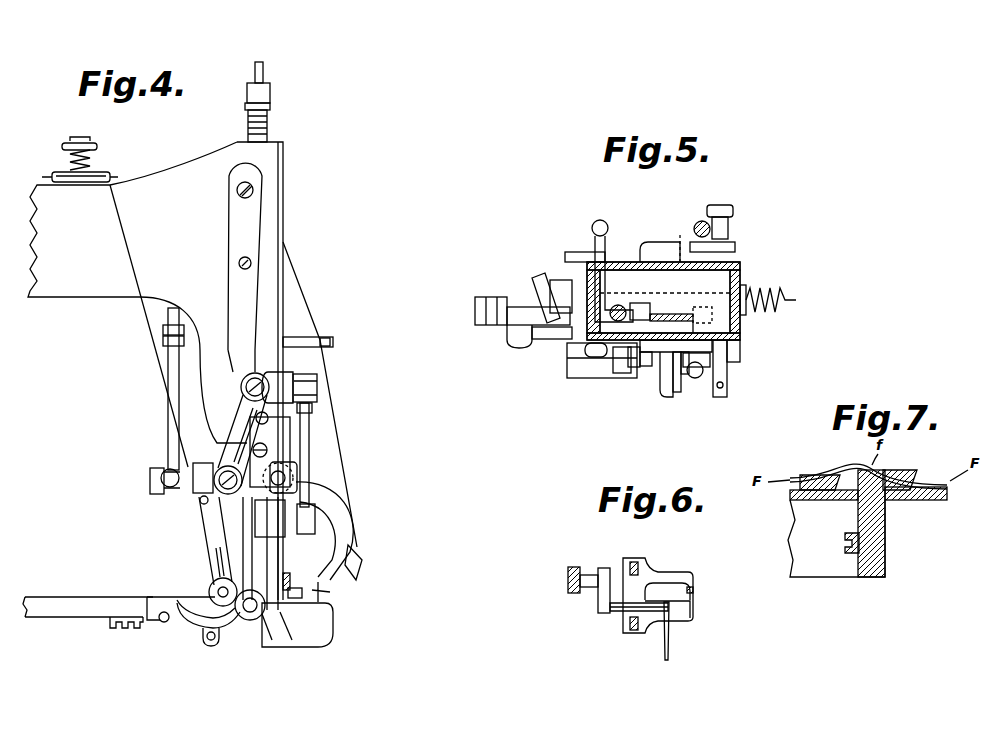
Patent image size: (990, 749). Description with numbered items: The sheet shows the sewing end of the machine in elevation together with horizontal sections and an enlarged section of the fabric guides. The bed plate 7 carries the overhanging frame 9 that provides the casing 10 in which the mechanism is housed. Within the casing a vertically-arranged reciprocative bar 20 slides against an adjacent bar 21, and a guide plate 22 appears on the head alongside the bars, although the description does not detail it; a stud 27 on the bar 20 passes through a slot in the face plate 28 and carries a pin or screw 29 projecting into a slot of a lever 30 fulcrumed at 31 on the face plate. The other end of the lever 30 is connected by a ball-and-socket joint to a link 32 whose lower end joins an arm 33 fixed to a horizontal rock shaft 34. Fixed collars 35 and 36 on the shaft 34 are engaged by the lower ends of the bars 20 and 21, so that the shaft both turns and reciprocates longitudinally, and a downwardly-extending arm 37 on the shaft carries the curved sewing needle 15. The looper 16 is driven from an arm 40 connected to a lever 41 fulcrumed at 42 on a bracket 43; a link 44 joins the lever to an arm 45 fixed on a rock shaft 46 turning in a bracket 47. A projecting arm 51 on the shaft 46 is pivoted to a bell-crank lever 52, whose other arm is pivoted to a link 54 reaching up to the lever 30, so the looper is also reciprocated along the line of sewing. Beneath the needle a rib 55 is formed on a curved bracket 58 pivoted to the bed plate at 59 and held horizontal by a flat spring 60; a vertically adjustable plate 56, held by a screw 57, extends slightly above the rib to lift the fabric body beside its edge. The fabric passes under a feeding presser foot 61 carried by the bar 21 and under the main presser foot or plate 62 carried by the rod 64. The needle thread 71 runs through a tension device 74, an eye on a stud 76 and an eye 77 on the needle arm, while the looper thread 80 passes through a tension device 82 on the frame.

In FIG. 4, the bed plate 7 is at (88, 596).
In FIG. 4, the frame 9 is at (54, 292).
In FIG. 5, the casing 10 is at (745, 270).
In FIG. 4, the sewing needle 15 is at (325, 594).
In FIG. 6, the sewing needle 15 is at (668, 645).
In FIG. 6, the looper 16 is at (615, 612).
In FIG. 4, the reciprocative bar 20 is at (265, 66).
In FIG. 5, the reciprocative bar 20 is at (686, 313).
In FIG. 5, the bar 21 is at (650, 305).
In FIG. 4, the guide plate 22 is at (250, 302).
In FIG. 5, the guide plate 22 is at (633, 303).
In FIG. 5, the stud 27 is at (685, 362).
In FIG. 4, the face plate 28 is at (284, 232).
In FIG. 5, the face plate 28 is at (748, 345).
In FIG. 5, the pin or screw 29 is at (700, 378).
In FIG. 4, the lever 30 is at (318, 376).
In FIG. 5, the lever 30 is at (660, 375).
In FIG. 4, the fulcrum 31 is at (312, 400).
In FIG. 5, the fulcrum 31 is at (590, 352).
In FIG. 4, the arm or link 32 is at (252, 432).
In FIG. 5, the arm or link 32 is at (535, 293).
In FIG. 4, the arm 33 is at (290, 458).
In FIG. 5, the arm 33 is at (558, 280).
In FIG. 4, the horizontal rock shaft 34 is at (285, 490).
In FIG. 5, the horizontal rock shaft 34 is at (630, 362).
In FIG. 5, the collar 35 is at (742, 352).
In FIG. 5, the collar 36 is at (645, 360).
In FIG. 4, the needle arm 37 is at (345, 522).
In FIG. 5, the needle arm 37 is at (675, 392).
In FIG. 4, the arm 40 is at (166, 392).
In FIG. 5, the arm 40 is at (700, 216).
In FIG. 4, the lever 41 is at (180, 492).
In FIG. 5, the lever 41 is at (655, 242).
In FIG. 5, the fulcrum 42 is at (680, 232).
In FIG. 5, the bracket 43 is at (735, 247).
In FIG. 4, the arm or link 44 is at (205, 525).
In FIG. 5, the arm or link 44 is at (570, 255).
In FIG. 4, the arm 45 is at (225, 606).
In FIG. 4, the rock shaft 46 is at (250, 620).
In FIG. 5, the rock shaft 46 is at (485, 297).
In FIG. 6, the rock shaft 46 is at (582, 590).
In FIG. 6, the bracket 47 is at (603, 612).
In FIG. 4, the projecting arm 51 is at (272, 640).
In FIG. 5, the projecting arm 51 is at (495, 325).
In FIG. 4, the bell-crank lever 52 is at (292, 640).
In FIG. 5, the bell-crank lever 52 is at (540, 340).
In FIG. 4, the link 54 is at (285, 478).
In FIG. 5, the link 54 is at (615, 372).
In FIG. 7, the rib 55 is at (886, 510).
In FIG. 7, the vertically adjustable plate 56 is at (860, 505).
In FIG. 7, the screw 57 is at (852, 553).
In FIG. 4, the curved plate or bracket 58 is at (190, 600).
In FIG. 7, the curved plate or bracket 58 is at (945, 500).
In FIG. 4, the pivot 59 is at (162, 622).
In FIG. 4, the flat spring 60 is at (190, 625).
In FIG. 7, the flat spring 60 is at (920, 500).
In FIG. 6, the feeding presser foot 61 is at (694, 590).
In FIG. 4, the main presser foot or plate 62 is at (300, 597).
In FIG. 6, the main presser foot or plate 62 is at (663, 575).
In FIG. 7, the main presser foot or plate 62 is at (905, 470).
In FIG. 4, the rod 64 is at (250, 86).
In FIG. 4, the needle thread 71 is at (298, 278).
In FIG. 5, the tension device 74 is at (760, 316).
In FIG. 4, the stud 76 is at (333, 338).
In FIG. 5, the stud 76 is at (727, 380).
In FIG. 4, the eye 77 is at (360, 578).
In FIG. 4, the looper thread 80 is at (128, 232).
In FIG. 4, the tension device 82 is at (100, 170).